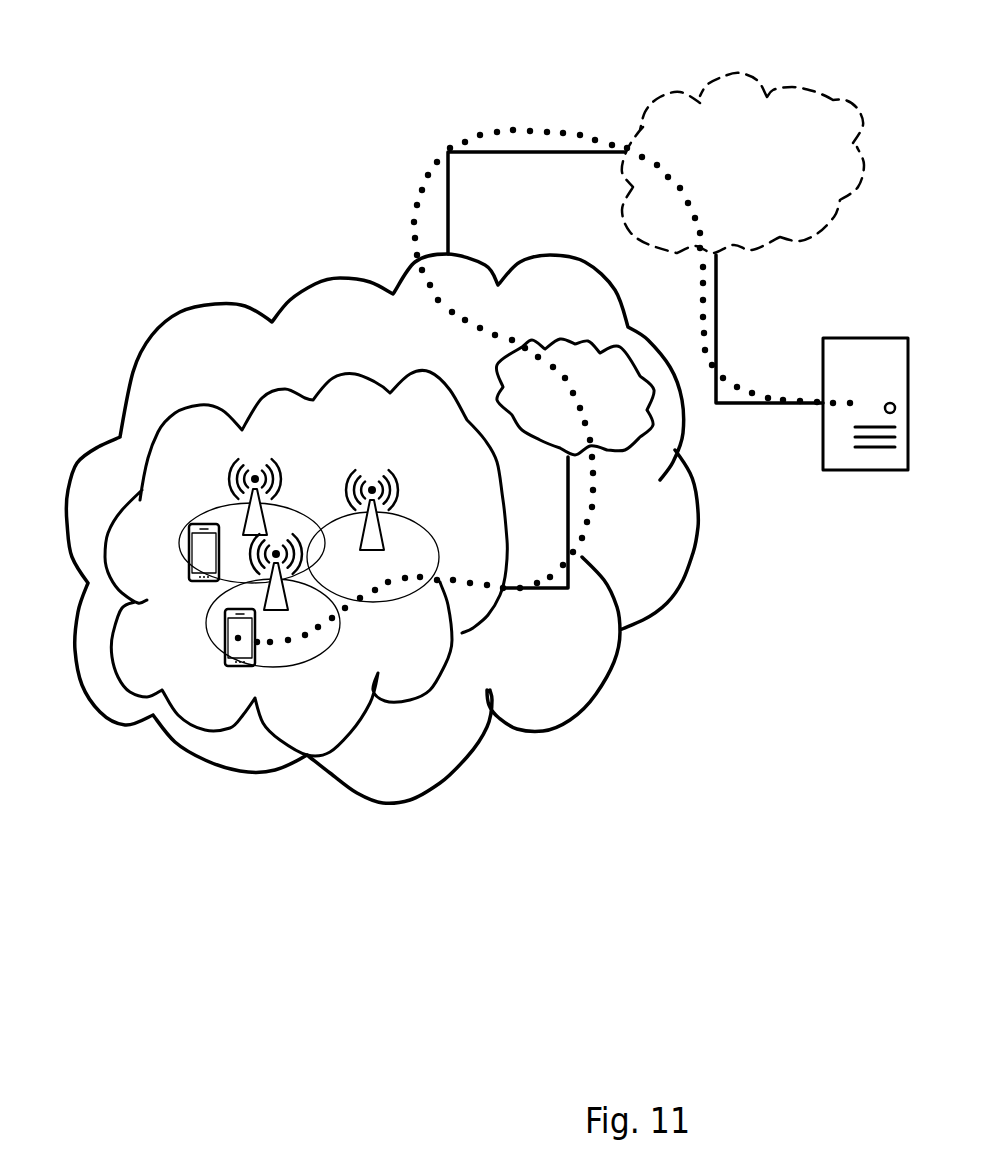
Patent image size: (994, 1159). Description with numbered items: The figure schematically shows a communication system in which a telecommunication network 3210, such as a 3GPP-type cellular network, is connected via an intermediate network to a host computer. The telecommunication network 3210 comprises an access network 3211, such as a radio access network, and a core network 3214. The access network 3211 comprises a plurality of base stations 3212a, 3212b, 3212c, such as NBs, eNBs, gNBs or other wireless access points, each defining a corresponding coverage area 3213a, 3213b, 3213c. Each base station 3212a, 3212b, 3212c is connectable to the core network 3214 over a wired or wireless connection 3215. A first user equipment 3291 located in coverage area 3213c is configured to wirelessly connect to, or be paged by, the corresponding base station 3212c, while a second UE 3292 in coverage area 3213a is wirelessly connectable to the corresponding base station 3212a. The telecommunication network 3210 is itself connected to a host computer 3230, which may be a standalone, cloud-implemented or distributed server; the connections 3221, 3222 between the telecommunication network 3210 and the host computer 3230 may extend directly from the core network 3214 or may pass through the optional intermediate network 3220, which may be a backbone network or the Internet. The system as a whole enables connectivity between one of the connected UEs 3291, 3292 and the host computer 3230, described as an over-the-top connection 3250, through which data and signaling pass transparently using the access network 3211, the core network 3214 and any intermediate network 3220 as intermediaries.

The telecommunication network 3210 is at (408, 321).
The access network 3211 is at (362, 435).
The base station 3212a is at (298, 580).
The base station 3212b is at (400, 493).
The base station 3212c is at (232, 478).
The coverage area 3213a is at (338, 620).
The coverage area 3213b is at (505, 590).
The coverage area 3213c is at (208, 517).
The core network 3214 is at (650, 408).
The wired or wireless connection 3215 is at (570, 500).
The intermediate network 3220 is at (767, 175).
The connection 3221 is at (527, 150).
The connection 3222 is at (773, 405).
The host computer 3230 is at (865, 419).
The over-the-top (OTT) connection 3250 is at (423, 177).
The first user equipment (UE) 3291 is at (187, 578).
The second UE 3292 is at (223, 658).